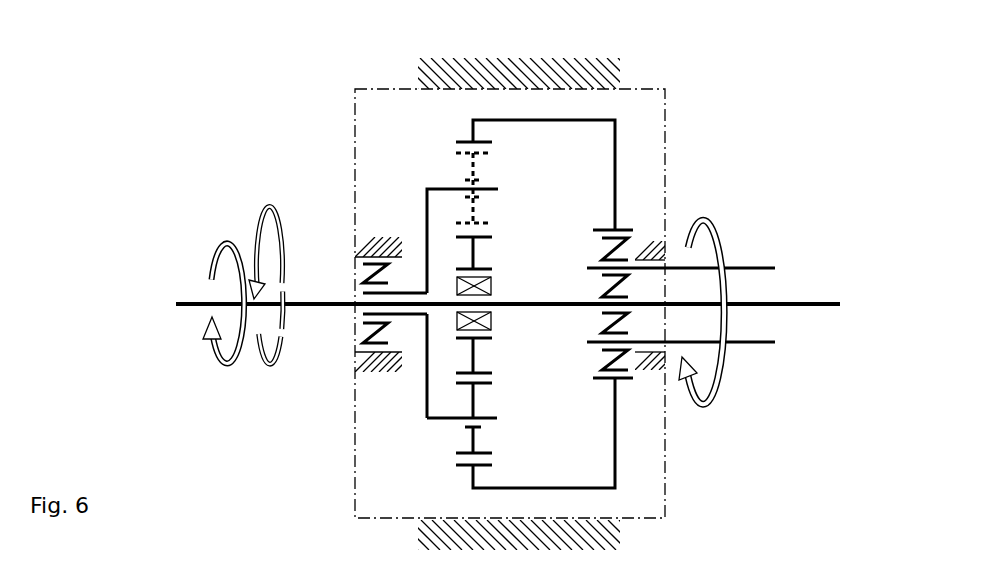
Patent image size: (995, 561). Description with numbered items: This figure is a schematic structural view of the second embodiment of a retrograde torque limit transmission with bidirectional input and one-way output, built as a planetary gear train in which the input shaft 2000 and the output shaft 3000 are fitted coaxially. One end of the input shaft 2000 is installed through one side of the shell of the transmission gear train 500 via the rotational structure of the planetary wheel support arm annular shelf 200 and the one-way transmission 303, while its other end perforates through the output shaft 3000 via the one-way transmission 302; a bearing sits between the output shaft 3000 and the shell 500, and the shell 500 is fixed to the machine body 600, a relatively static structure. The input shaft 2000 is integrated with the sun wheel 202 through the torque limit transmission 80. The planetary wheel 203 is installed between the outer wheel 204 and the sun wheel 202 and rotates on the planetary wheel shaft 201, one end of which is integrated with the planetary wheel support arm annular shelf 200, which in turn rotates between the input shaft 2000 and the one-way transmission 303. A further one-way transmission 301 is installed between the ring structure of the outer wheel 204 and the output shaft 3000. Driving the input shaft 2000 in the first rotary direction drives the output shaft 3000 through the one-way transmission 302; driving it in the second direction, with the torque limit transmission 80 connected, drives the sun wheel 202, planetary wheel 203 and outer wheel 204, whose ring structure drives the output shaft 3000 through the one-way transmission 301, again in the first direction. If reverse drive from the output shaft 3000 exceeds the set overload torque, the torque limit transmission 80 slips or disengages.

The torque limit transmission 80 is at (491, 287).
The planetary wheel support arm annular shelf 200 is at (427, 387).
The planetary wheel shaft 201 is at (488, 420).
The sun wheel 202 is at (490, 373).
The planetary wheel 203 is at (473, 167).
The outer wheel 204 is at (456, 465).
The one-way transmission 301 is at (605, 252).
The one-way transmission 302 is at (607, 323).
The one-way transmission 303 is at (367, 279).
The shell of the transmission gear train 500 is at (355, 143).
The machine body 600 is at (523, 76).
The input shaft 2000 is at (200, 304).
The output shaft 3000 is at (745, 267).